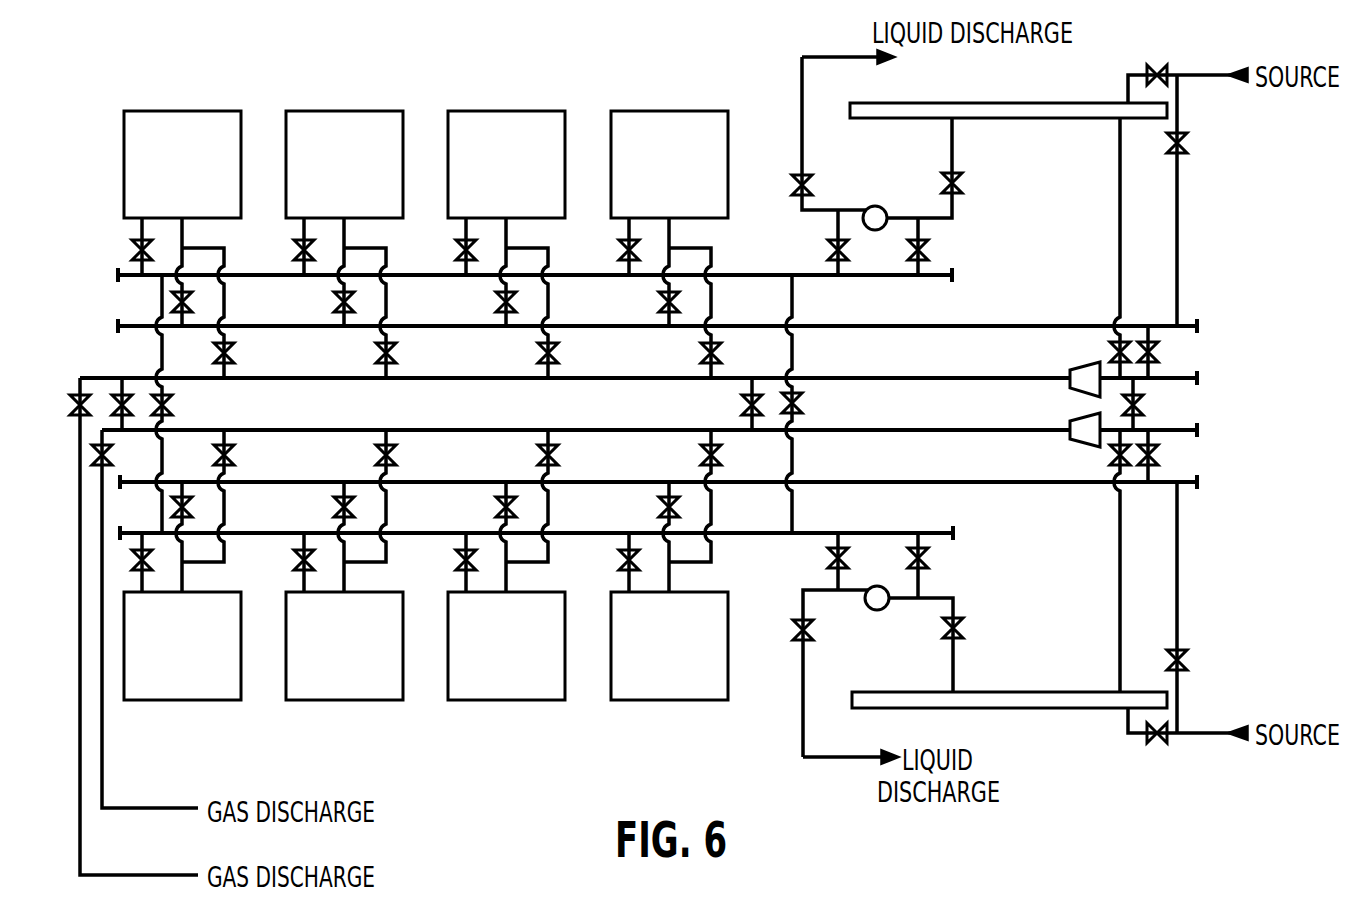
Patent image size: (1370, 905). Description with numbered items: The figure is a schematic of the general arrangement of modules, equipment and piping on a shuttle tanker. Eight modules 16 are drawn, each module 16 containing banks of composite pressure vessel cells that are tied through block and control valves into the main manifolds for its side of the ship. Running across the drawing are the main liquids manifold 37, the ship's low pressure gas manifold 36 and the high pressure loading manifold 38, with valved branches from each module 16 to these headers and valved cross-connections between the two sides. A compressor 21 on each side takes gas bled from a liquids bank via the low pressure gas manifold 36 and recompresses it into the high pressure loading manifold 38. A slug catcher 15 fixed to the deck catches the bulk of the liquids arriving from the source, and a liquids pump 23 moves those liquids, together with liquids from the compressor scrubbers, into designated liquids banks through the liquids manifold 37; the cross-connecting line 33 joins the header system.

The slug catcher 15 is at (1088, 120).
The module 16 is at (338, 110).
The compressor 21 is at (1082, 363).
The liquids pump 23 is at (887, 228).
The cross-connect line 33 is at (792, 488).
The low pressure gas manifold 36 is at (950, 327).
The main liquids manifold 37 is at (943, 268).
The high pressure loading manifold 38 is at (873, 378).